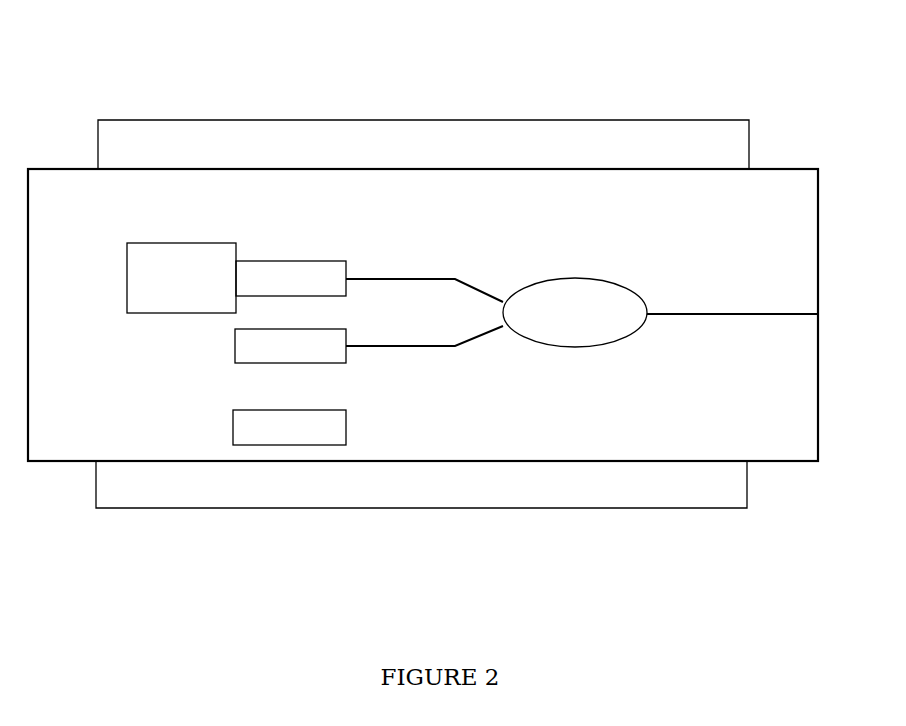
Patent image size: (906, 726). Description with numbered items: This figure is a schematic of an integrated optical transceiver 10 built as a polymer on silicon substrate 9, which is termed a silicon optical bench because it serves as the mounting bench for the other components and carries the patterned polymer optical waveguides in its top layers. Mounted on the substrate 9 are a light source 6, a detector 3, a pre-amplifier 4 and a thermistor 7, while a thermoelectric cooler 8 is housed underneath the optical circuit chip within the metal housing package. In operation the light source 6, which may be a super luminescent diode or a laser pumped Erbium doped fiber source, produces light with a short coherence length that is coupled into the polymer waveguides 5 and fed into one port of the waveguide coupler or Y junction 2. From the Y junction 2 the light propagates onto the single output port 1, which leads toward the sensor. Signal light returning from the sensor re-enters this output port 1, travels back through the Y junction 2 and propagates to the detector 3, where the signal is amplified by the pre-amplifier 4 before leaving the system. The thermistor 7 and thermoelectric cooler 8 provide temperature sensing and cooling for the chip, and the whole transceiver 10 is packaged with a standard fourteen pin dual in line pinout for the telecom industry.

The single output port 1 is at (712, 298).
The waveguide coupler or Y junction 2 is at (535, 290).
The detector 3 is at (315, 260).
The pre-amplifier 4 is at (138, 260).
The polymer waveguides 5 is at (402, 355).
The light source 6 is at (258, 364).
The thermistor 7 is at (317, 441).
The thermoelectric cooler 8 is at (380, 486).
The polymer on silicon substrate 9 is at (520, 435).
The integrated optical device 10 is at (240, 98).